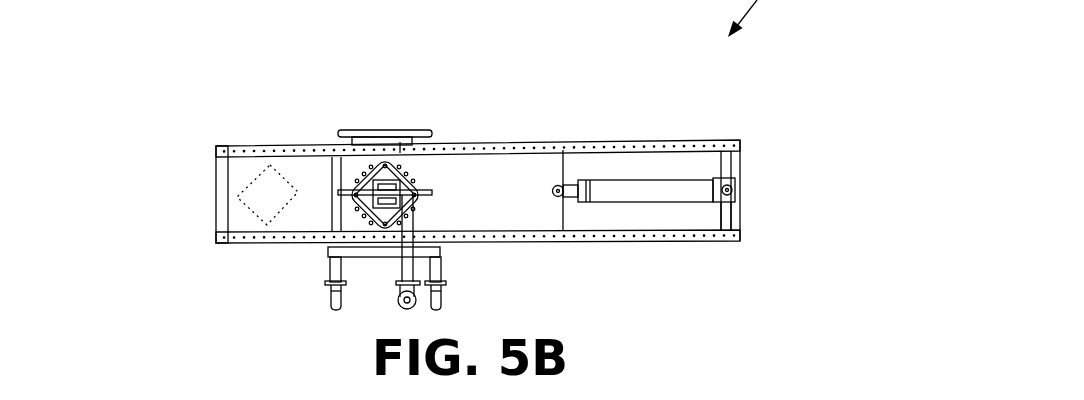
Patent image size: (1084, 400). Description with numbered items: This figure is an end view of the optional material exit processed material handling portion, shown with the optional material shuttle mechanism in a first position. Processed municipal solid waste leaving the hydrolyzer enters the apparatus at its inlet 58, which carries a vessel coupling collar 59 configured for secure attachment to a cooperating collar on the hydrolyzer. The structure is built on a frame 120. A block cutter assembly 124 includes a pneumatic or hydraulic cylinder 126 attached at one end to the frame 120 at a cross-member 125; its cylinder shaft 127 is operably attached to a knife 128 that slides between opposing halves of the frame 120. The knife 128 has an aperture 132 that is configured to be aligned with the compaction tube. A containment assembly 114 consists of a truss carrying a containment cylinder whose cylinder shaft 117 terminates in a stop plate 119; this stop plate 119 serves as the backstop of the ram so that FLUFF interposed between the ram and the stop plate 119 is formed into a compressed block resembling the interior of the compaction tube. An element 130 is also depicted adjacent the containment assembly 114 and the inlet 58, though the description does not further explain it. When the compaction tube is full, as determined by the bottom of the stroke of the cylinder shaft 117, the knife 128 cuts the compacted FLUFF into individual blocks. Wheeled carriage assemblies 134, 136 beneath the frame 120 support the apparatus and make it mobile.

The inlet 58 is at (370, 118).
The vessel coupling collar 59 is at (342, 130).
The containment assembly 114 is at (364, 219).
The cylinder shaft 117 is at (574, 180).
The stop plate 119 is at (396, 160).
The frame 120 is at (235, 245).
The block cutter assembly 124 is at (738, 212).
The cross-member 125 is at (733, 180).
The pneumatic or hydraulic cylinder 126 is at (653, 193).
The cylinder shaft 127 is at (560, 186).
The knife 128 is at (543, 217).
The pivot mount 130 is at (432, 148).
The aperture 132 is at (262, 197).
The wheeled carriage assembly 134 is at (335, 308).
The wheeled carriage assembly 136 is at (417, 298).